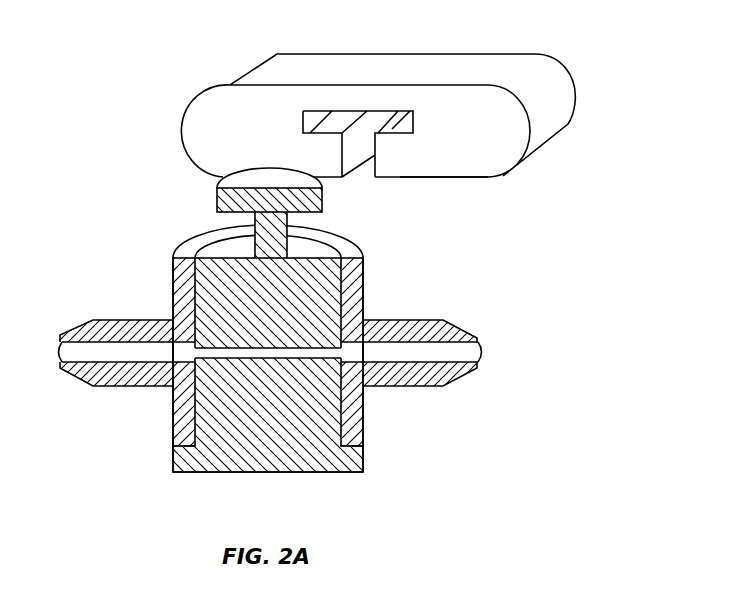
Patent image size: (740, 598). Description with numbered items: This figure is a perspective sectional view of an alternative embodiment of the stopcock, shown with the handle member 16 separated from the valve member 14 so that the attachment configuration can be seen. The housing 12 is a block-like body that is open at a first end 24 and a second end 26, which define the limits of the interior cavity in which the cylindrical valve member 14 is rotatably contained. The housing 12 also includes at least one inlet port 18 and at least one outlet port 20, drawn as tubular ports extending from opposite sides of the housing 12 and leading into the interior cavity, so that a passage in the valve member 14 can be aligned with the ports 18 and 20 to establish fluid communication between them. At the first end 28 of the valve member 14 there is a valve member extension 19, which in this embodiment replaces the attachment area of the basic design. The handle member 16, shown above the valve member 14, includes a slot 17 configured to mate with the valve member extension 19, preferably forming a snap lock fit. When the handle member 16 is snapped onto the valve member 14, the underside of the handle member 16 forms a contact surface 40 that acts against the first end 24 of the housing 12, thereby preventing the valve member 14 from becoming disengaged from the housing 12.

The housing 12 is at (366, 291).
The valve member 14 is at (216, 472).
The handle member 16 is at (548, 100).
The slot 17 is at (343, 111).
The inlet port 18 is at (74, 376).
The valve member extension 19 is at (325, 181).
The outlet port 20 is at (457, 328).
The first end 24 is at (173, 289).
The second end 26 is at (365, 428).
The first end 28 is at (225, 247).
The contact surface 40 is at (447, 178).